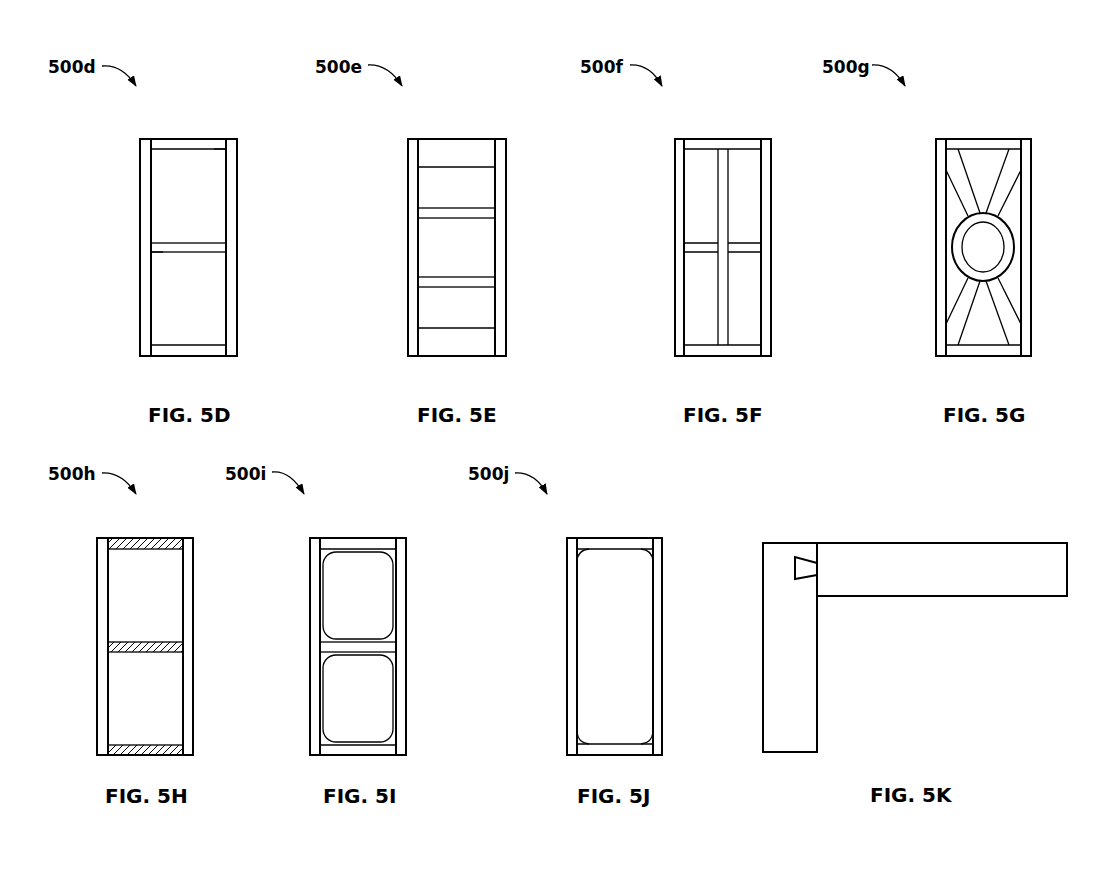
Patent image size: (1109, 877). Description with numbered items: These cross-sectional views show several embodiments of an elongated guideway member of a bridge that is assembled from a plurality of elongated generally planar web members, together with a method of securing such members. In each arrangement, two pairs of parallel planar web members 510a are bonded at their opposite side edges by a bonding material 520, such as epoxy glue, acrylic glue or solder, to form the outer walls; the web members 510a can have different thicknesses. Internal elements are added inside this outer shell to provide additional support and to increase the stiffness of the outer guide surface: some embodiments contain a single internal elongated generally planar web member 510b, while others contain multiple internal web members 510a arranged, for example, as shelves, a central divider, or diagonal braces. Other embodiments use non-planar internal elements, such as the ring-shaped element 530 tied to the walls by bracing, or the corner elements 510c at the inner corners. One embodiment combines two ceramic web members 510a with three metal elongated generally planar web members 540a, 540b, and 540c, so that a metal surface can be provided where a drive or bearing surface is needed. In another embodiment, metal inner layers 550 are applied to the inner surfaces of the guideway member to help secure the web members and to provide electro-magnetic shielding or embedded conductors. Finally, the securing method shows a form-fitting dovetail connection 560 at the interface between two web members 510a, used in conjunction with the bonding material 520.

In FIG. 5D, the elongated generally planar web member 510a is at (172, 139).
In FIG. 5E, the elongated generally planar web member 510a is at (475, 138).
In FIG. 5F, the elongated generally planar web member 510a is at (692, 138).
In FIG. 5G, the elongated generally planar web member 510a is at (953, 138).
In FIG. 5H, the elongated generally planar web member 510a is at (97, 552).
In FIG. 5I, the elongated generally planar web member 510a is at (357, 538).
In FIG. 5J, the elongated generally planar web member 510a is at (567, 647).
In FIG. 5K, the elongated generally planar web member 510a is at (942, 597).
In FIG. 5D, the internal elongated generally planar web member 510b is at (162, 243).
In FIG. 5E, the internal elongated generally planar web member 510b is at (478, 218).
In FIG. 5F, the internal elongated generally planar web member 510b is at (730, 213).
In FIG. 5G, the internal elongated generally planar web member 510b is at (955, 302).
In FIG. 5I, the internal elongated generally planar web member 510b is at (345, 648).
In FIG. 5J, the non-planar internal element 510c is at (583, 553).
In FIG. 5D, the bonding material 520 is at (225, 150).
In FIG. 5E, the bonding material 520 is at (420, 147).
In FIG. 5F, the bonding material 520 is at (767, 143).
In FIG. 5G, the bonding material 520 is at (1002, 148).
In FIG. 5K, the bonding material 520 is at (820, 552).
In FIG. 5G, the non-planar internal element 530 is at (967, 228).
In FIG. 5H, the metal elongated generally planar web member 540a is at (153, 550).
In FIG. 5H, the metal elongated generally planar web member 540b is at (153, 652).
In FIG. 5H, the metal elongated generally planar web member 540c is at (165, 755).
In FIG. 5I, the metal inner layer 550 is at (368, 553).
In FIG. 5K, the dovetail connection 560 is at (785, 541).